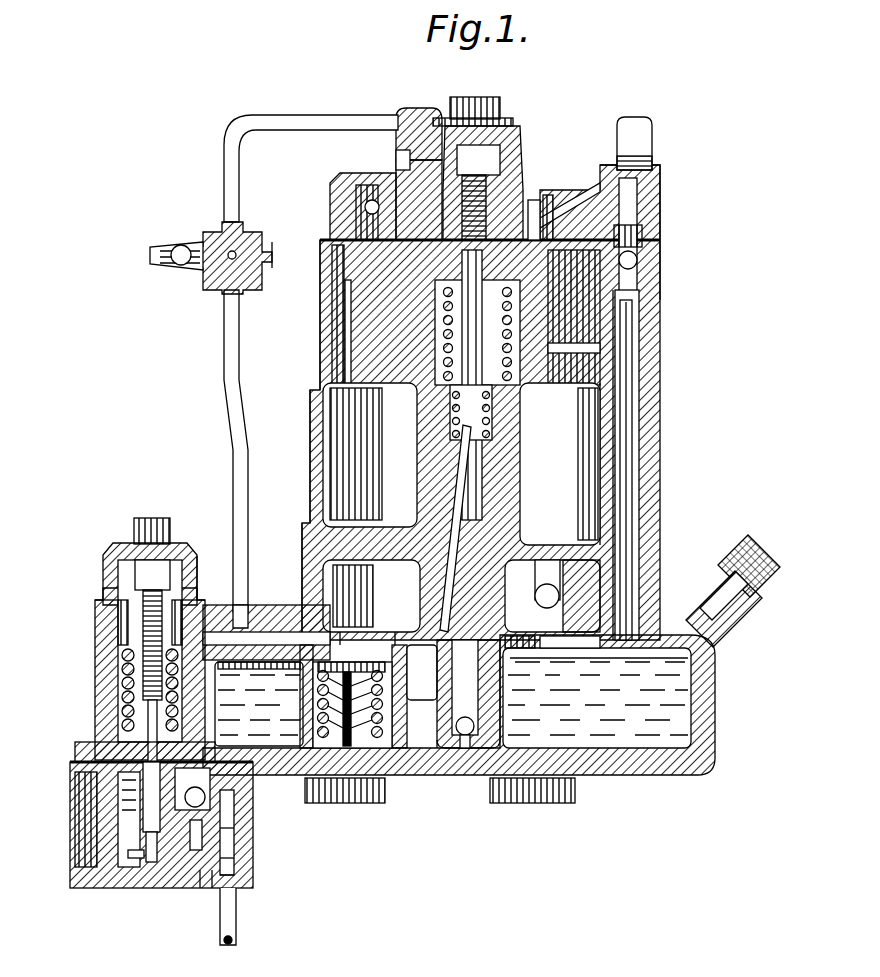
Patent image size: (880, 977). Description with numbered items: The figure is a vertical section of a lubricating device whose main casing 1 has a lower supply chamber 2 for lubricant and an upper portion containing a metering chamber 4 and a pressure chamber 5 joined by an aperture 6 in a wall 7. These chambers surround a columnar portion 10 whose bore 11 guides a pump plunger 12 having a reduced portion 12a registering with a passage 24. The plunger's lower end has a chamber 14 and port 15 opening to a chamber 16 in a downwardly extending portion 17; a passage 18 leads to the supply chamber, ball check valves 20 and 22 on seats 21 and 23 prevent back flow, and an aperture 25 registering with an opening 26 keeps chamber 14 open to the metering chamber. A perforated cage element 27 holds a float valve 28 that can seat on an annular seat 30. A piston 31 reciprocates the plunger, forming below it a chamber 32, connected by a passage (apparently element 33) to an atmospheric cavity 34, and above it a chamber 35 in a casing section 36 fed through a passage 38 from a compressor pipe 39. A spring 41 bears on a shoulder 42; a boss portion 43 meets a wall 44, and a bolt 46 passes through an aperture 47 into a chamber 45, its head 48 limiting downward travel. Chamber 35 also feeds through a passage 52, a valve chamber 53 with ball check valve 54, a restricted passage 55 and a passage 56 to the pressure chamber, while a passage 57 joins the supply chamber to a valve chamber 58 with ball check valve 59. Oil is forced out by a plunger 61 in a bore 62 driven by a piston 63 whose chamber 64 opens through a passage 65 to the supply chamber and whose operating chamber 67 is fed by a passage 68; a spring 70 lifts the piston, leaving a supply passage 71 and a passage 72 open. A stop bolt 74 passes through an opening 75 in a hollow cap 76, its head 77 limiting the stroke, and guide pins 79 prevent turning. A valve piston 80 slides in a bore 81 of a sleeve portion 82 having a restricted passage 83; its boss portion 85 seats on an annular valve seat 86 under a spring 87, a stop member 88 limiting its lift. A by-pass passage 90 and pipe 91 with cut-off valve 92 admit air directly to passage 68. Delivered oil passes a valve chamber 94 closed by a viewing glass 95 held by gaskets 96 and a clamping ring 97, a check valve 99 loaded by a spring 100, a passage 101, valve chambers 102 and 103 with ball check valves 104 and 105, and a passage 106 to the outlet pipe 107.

The main casing 1 is at (660, 492).
The supply chamber 2 is at (680, 710).
The metering chamber 4 is at (316, 558).
The pressure chamber 5 is at (320, 392).
The aperture 6 is at (550, 560).
The wall 7 is at (318, 506).
The columnar portion 10 is at (492, 502).
The bore 11 is at (505, 468).
The pump plunger 12 is at (466, 490).
The intermediate reduced portion 12a is at (468, 464).
The chamber 14 is at (366, 584).
The port 15 is at (478, 702).
The chamber 16 is at (493, 720).
The downwardly extending portion 17 is at (443, 744).
The passage 18 is at (467, 744).
The ball check valve 20 is at (497, 740).
The seat 21 is at (477, 742).
The ball check valve 22 is at (538, 644).
The seat 23 is at (560, 644).
The passage 24 is at (462, 512).
The aperture 25 is at (456, 588).
The opening 26 is at (533, 614).
The perforated cage element 27 is at (640, 562).
The float valve 28 is at (650, 638).
The annular seat 30 is at (620, 478).
The piston 31 is at (338, 313).
The chamber 32 is at (636, 302).
The ring 33 is at (552, 356).
The atmospheric cavity 34 is at (585, 334).
The chamber 35 is at (528, 238).
The casing section 36 is at (658, 214).
The passage 38 is at (590, 186).
The pipe 39 is at (650, 148).
The spring 41 is at (336, 402).
The shoulder 42 is at (602, 424).
The central boss portion 43 is at (510, 225).
The wall 44 is at (495, 192).
The chamber 45 is at (447, 188).
The bolt 46 is at (473, 186).
The aperture 47 is at (420, 174).
The head 48 is at (462, 170).
The passage 52 is at (327, 276).
The valve chamber 53 is at (337, 174).
The ball check valve 54 is at (348, 196).
The restricted passage 55 is at (340, 210).
The passage 56 is at (344, 345).
The passage 57 is at (628, 388).
The valve chamber 58 is at (640, 232).
The ball check valve 59 is at (640, 258).
The pump plunger 61 is at (112, 710).
The bore 62 is at (96, 760).
The piston 63 is at (100, 652).
The chamber 64 is at (112, 686).
The passage 65 is at (216, 694).
The operating chamber 67 is at (96, 630).
The passage 68 is at (258, 624).
The spring 70 is at (277, 738).
The supply passage 71 is at (228, 782).
The passage 72 is at (98, 746).
The adjustable stop bolt 74 is at (112, 568).
The opening 75 is at (98, 592).
The hollow cap 76 is at (120, 542).
The head 77 is at (147, 575).
The guide pins 79 is at (197, 545).
The valve piston 80 is at (343, 740).
The bore 81 is at (303, 634).
The sleeve portion 82 is at (303, 706).
The restricted passage 83 is at (422, 672).
The central boss portion 85 is at (341, 634).
The annular valve seat 86 is at (395, 634).
The spring 87 is at (374, 732).
The stop member 88 is at (388, 714).
The passage 90 is at (413, 132).
The pipe 91 is at (232, 197).
The cut-off valve 92 is at (217, 272).
The valve chamber 94 is at (152, 888).
The viewing glass 95 is at (133, 888).
The annular gaskets 96 is at (113, 888).
The clamping ring 97 is at (73, 888).
The check valve 99 is at (152, 868).
The spring 100 is at (198, 888).
The passage 101 is at (212, 888).
The valve chamber 102 is at (240, 862).
The valve chamber 103 is at (233, 810).
The lower ball check valve 104 is at (237, 876).
The upper ball check valve 105 is at (240, 836).
The passage 106 is at (233, 892).
The pipe 107 is at (236, 938).